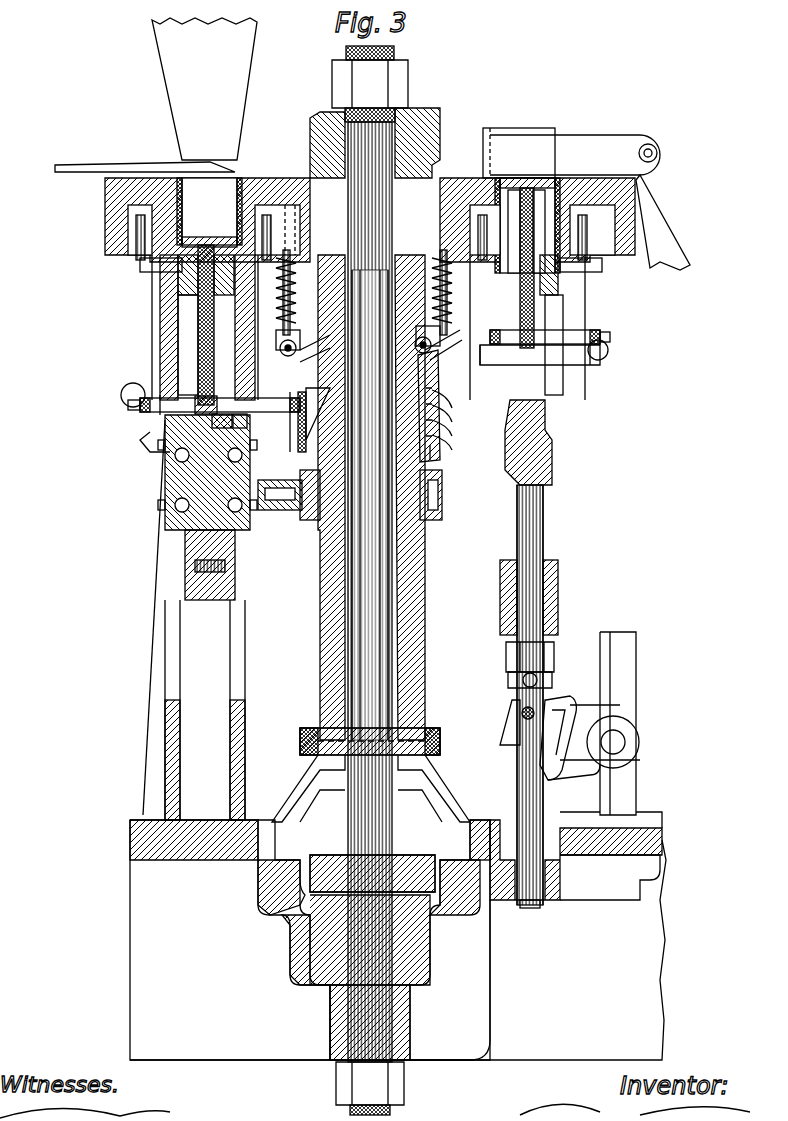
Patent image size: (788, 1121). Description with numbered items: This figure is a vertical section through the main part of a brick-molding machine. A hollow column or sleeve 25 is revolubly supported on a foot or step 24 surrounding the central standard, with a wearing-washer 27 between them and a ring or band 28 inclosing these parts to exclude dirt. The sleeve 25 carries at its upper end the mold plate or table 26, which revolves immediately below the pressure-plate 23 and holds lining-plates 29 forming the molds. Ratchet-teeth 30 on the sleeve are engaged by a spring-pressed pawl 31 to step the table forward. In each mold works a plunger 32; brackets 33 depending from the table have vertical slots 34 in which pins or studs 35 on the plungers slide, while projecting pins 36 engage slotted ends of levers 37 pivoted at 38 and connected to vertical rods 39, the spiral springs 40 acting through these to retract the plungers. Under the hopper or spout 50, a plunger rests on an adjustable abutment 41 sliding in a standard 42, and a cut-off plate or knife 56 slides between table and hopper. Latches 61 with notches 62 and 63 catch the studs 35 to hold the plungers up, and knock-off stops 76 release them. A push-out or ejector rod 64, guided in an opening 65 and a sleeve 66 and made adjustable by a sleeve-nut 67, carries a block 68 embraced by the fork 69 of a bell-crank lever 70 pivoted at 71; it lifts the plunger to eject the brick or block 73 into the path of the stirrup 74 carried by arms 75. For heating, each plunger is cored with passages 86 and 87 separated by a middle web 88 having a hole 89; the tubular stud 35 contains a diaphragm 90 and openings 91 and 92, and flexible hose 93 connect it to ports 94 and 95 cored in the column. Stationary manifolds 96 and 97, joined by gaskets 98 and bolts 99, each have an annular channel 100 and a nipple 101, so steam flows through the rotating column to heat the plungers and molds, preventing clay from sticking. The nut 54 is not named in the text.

The pressure-plate 23 is at (440, 112).
The foot or step 24 is at (450, 768).
The hollow column or sleeve 25 is at (425, 640).
The mold plate or table 26 is at (448, 178).
The wearing-washer 27 is at (318, 735).
The ring or band 28 is at (440, 740).
The lining-plates 29 is at (186, 200).
The ratchet-teeth 30 is at (440, 496).
The spring-pressed pawl 31 is at (300, 505).
The plunger 32 is at (196, 242).
The brackets 33 is at (198, 312).
The vertical slots 34 is at (235, 372).
The pins or studs 35 is at (132, 412).
The projecting pins or studs 36 is at (140, 398).
The levers 37 is at (300, 356).
The pivot 38 is at (292, 340).
The vertical rods 39 is at (364, 290).
The spiral springs 40 is at (365, 292).
The adjustable abutment 41 is at (230, 550).
The standard 42 is at (194, 620).
The hopper or spout 50 is at (204, 89).
The nut 54 is at (330, 895).
The plate or knife 56 is at (128, 164).
The latches 61 is at (152, 323).
The notch 62 is at (140, 405).
The notch 63 is at (160, 345).
The push-out or ejector rod 64 is at (543, 496).
The hole or opening 65 is at (538, 905).
The sleeve 66 is at (558, 572).
The sleeve-nut 67 is at (555, 660).
The box or block 68 is at (512, 716).
The fork 69 is at (555, 710).
The bell-crank lever 70 is at (570, 762).
The pivot 71 is at (625, 742).
The brick or block 73 is at (540, 140).
The stirrup 74 is at (610, 140).
The arms 75 is at (665, 180).
The knock-off projections or stops 76 is at (232, 420).
The passage 86 is at (178, 288).
The passage 87 is at (178, 350).
The middle web 88 is at (214, 294).
The hole 89 is at (140, 262).
The block or diaphragm 90 is at (190, 440).
The opening 91 is at (158, 408).
The opening 92 is at (245, 425).
The flexible tubes or hose 93 is at (121, 395).
The port 94 is at (452, 404).
The port 95 is at (452, 450).
The manifold 96 is at (452, 420).
The manifold 97 is at (452, 436).
The gaskets 98 is at (314, 404).
The bolts 99 is at (298, 412).
The channel 100 is at (286, 422).
The nipple 101 is at (432, 458).